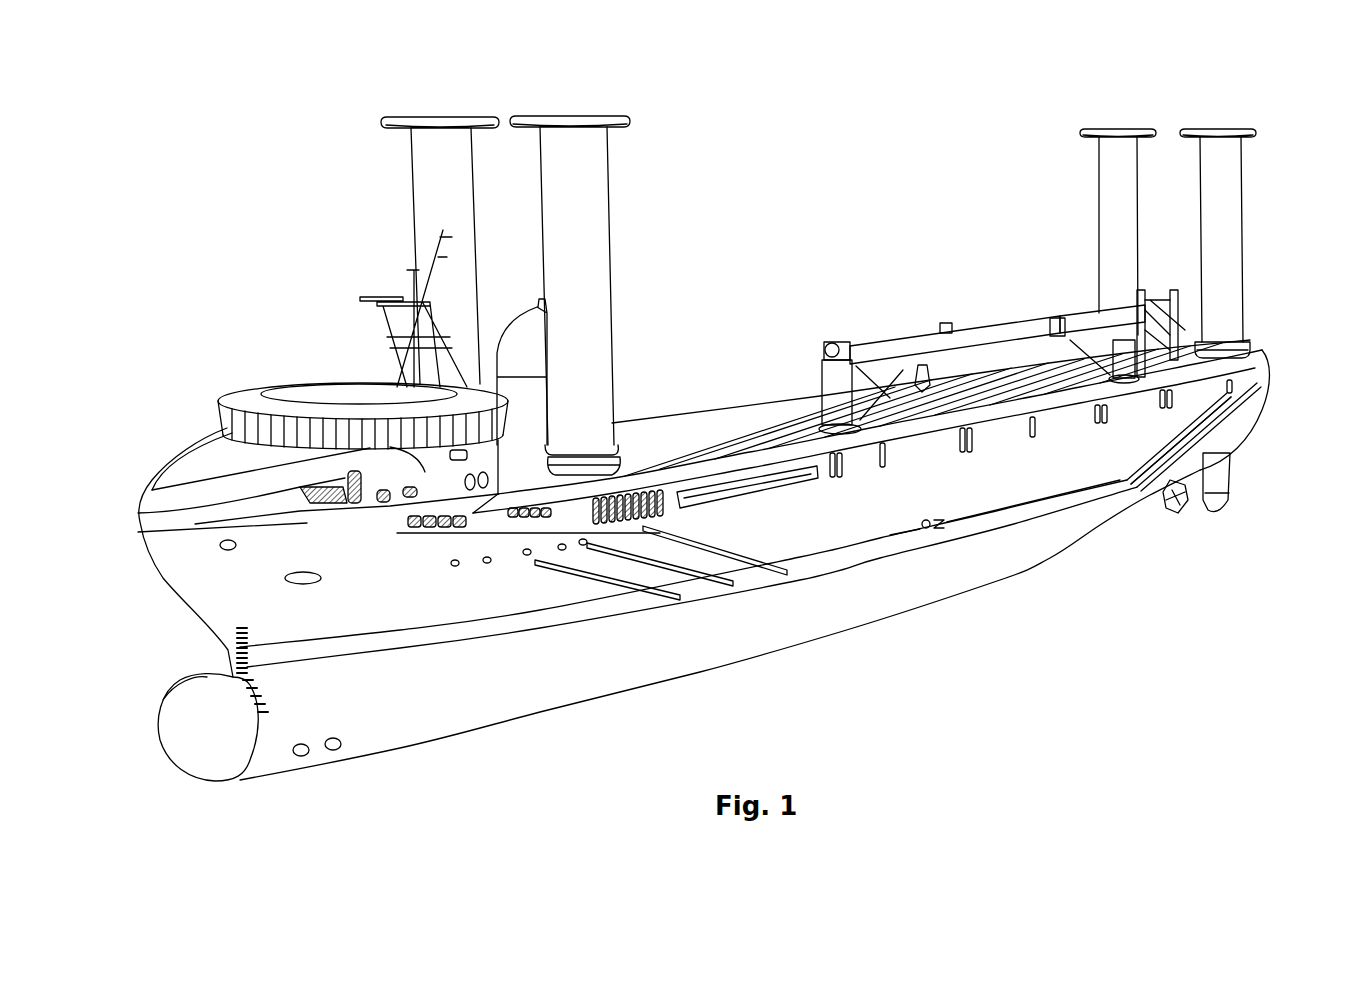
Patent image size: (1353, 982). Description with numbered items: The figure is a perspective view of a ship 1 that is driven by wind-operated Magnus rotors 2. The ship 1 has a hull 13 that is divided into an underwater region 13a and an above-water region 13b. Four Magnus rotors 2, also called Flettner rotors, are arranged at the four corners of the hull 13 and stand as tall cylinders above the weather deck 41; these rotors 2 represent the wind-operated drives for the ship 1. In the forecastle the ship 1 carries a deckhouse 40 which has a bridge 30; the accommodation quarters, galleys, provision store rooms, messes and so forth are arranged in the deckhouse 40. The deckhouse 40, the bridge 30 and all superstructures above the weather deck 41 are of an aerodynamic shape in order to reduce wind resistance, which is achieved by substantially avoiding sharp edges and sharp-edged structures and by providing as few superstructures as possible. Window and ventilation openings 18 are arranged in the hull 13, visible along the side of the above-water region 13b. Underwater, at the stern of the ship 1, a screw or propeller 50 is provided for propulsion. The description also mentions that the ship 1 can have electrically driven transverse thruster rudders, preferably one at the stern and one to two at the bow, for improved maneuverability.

The ship 1 is at (982, 132).
The Magnus rotors 2 is at (437, 195).
The hull 13 is at (855, 560).
The underwater region 13a is at (810, 625).
The above-water region 13b is at (992, 493).
The window and ventilation openings 18 is at (622, 492).
The bridge 30 is at (323, 438).
The deckhouse 40 is at (297, 510).
The weather deck 41 is at (702, 422).
The propeller 50 is at (1183, 503).